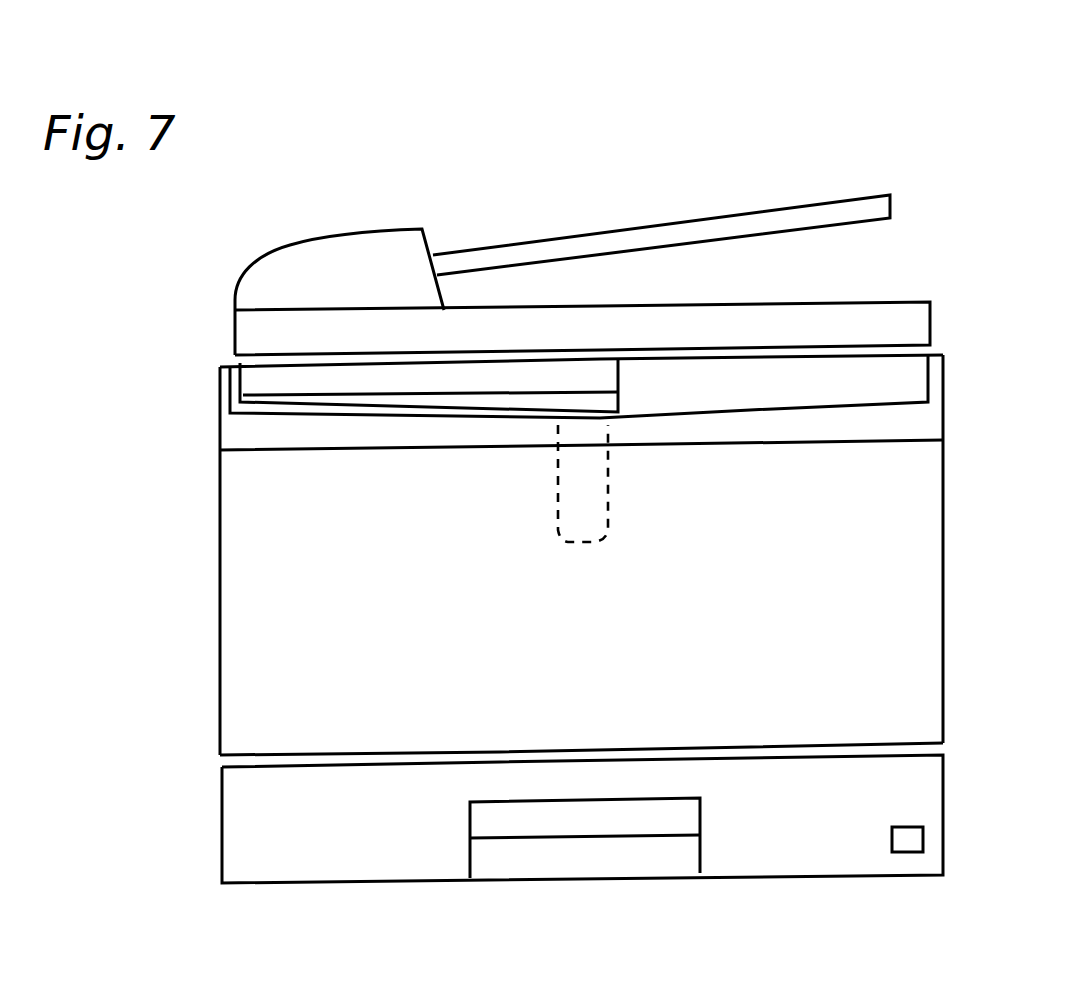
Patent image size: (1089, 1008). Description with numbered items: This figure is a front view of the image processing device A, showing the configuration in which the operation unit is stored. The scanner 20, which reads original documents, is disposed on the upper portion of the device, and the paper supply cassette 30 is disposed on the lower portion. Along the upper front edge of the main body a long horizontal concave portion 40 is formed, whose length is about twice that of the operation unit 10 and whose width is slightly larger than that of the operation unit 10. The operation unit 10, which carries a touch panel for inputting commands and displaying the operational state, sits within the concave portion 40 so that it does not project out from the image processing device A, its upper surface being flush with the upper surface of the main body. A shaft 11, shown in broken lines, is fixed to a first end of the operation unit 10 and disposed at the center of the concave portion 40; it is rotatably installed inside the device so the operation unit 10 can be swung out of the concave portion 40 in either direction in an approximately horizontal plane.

The image processing device A is at (683, 157).
The operation unit 10 is at (275, 377).
The shaft 11 is at (598, 542).
The scanner 20 is at (478, 242).
The paper supply cassette 30 is at (870, 793).
The concave portion 40 is at (827, 385).